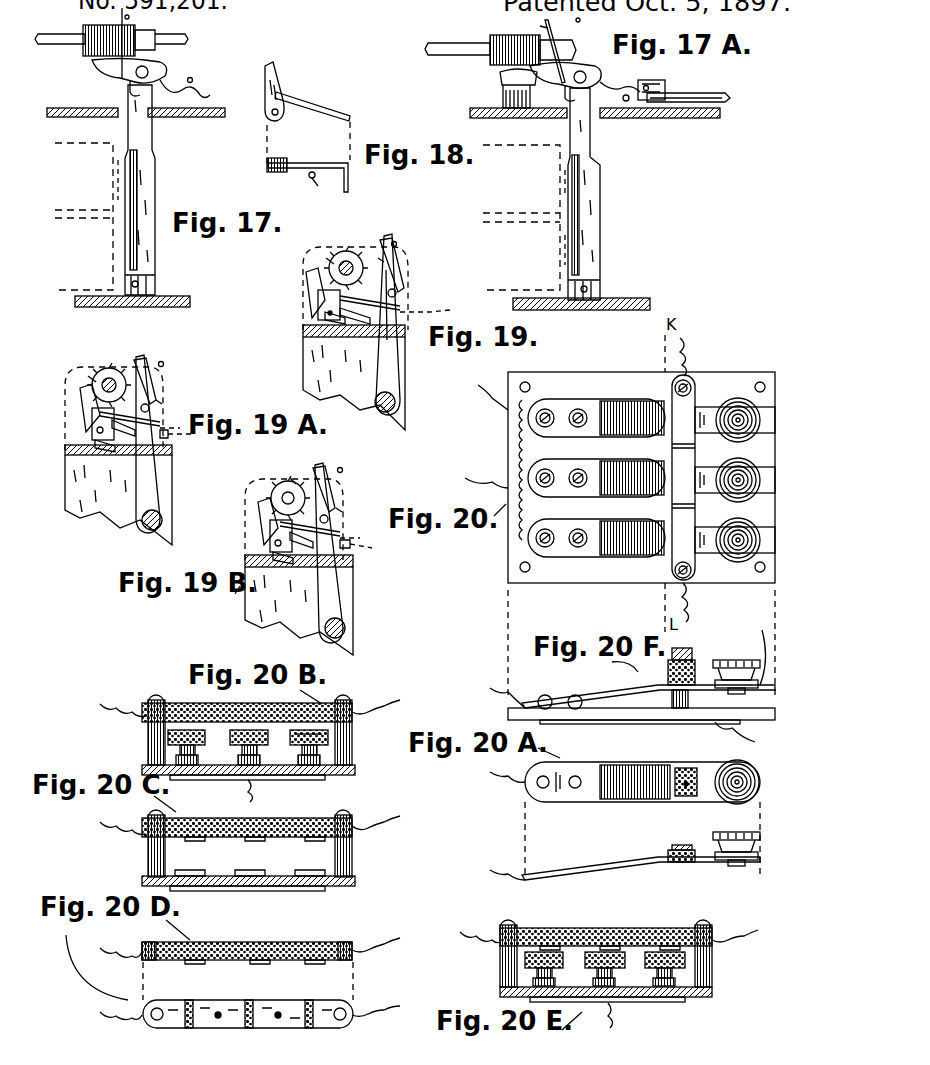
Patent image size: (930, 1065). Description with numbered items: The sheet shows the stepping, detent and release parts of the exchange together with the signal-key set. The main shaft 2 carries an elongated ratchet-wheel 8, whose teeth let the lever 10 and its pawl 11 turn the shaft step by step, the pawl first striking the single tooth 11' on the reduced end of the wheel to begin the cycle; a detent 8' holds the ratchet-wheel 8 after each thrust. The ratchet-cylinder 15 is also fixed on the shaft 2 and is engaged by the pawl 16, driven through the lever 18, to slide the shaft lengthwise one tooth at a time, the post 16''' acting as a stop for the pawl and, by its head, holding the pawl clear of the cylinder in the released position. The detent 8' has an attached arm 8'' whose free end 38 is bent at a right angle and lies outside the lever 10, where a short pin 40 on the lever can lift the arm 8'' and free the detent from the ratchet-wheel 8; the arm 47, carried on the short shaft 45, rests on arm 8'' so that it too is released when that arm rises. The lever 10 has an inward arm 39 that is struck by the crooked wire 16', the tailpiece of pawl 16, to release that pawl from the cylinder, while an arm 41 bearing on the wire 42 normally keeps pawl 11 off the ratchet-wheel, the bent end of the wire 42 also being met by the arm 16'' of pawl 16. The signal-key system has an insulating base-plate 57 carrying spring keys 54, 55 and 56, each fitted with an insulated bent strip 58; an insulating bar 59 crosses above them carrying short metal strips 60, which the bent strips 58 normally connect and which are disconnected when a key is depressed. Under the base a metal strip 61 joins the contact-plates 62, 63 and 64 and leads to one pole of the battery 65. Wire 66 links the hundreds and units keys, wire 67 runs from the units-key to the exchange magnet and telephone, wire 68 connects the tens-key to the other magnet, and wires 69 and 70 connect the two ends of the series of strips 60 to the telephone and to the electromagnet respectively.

In FIG. 17, the shaft 2 is at (170, 42).
In FIG. 17A, the shaft 2 is at (470, 48).
In FIG. 18, the ratchet-wheel 8 is at (307, 172).
In FIG. 19, the ratchet-wheel 8 is at (346, 253).
In FIG. 19A, the ratchet-wheel 8 is at (87, 378).
In FIG. 19B, the ratchet-wheel 8 is at (267, 504).
In FIG. 18, the detent 8' is at (282, 91).
In FIG. 19, the detent 8' is at (310, 294).
In FIG. 19A, the detent 8' is at (97, 412).
In FIG. 19B, the detent 8' is at (275, 525).
In FIG. 17, the arm 8'' is at (208, 58).
In FIG. 17A, the arm 8'' is at (663, 71).
In FIG. 19, the lever 10 is at (393, 342).
In FIG. 19A, the lever 10 is at (148, 462).
In FIG. 19B, the lever 10 is at (328, 566).
In FIG. 19, the pawl 11 is at (381, 239).
In FIG. 19A, the pawl 11 is at (195, 390).
In FIG. 19B, the pawl 11 is at (374, 498).
In FIG. 19, the tooth 11' is at (318, 244).
In FIG. 19A, the tooth 11' is at (70, 367).
In FIG. 19B, the tooth 11' is at (282, 465).
In FIG. 17, the ratchet-cylinder 15 is at (100, 45).
In FIG. 17A, the ratchet-cylinder 15 is at (512, 50).
In FIG. 17, the pawl 16 is at (113, 50).
In FIG. 17A, the pawl 16 is at (582, 83).
In FIG. 19, the pawl 16 is at (332, 344).
In FIG. 19A, the pawl 16 is at (90, 490).
In FIG. 19B, the pawl 16 is at (275, 580).
In FIG. 17, the crooked wire 16' is at (195, 81).
In FIG. 17A, the arm 16'' is at (519, 20).
In FIG. 17A, the post 16''' is at (491, 88).
In FIG. 17, the lever 18 is at (143, 140).
In FIG. 17A, the lever 18 is at (592, 178).
In FIG. 18, the free end 38 is at (352, 118).
In FIG. 19A, the free end 38 is at (170, 432).
In FIG. 19B, the free end 38 is at (352, 546).
In FIG. 17A, the arm 39 is at (627, 102).
In FIG. 19, the arm 39 is at (372, 330).
In FIG. 19A, the arm 39 is at (130, 440).
In FIG. 19B, the arm 39 is at (308, 552).
In FIG. 19, the pin 40 is at (412, 296).
In FIG. 19A, the pin 40 is at (162, 424).
In FIG. 19B, the pin 40 is at (346, 540).
In FIG. 19, the arm 41 is at (402, 275).
In FIG. 19A, the arm 41 is at (156, 385).
In FIG. 19B, the arm 41 is at (335, 494).
In FIG. 17, the wire 42 is at (130, 17).
In FIG. 17A, the wire 42 is at (580, 23).
In FIG. 19, the wire 42 is at (398, 244).
In FIG. 19A, the wire 42 is at (165, 362).
In FIG. 19B, the wire 42 is at (344, 469).
In FIG. 17A, the short shaft 45 is at (712, 92).
In FIG. 17A, the arm 47 is at (666, 84).
In FIG. 20, the key 54 is at (625, 425).
In FIG. 20A, the key 54 is at (642, 782).
In FIG. 20, the key 55 is at (628, 488).
In FIG. 20, the key 56 is at (632, 548).
In FIG. 20F, the key 56 is at (742, 660).
In FIG. 20A, the key 56 is at (736, 849).
In FIG. 20, the base-plate 57 is at (580, 566).
In FIG. 20F, the base-plate 57 is at (622, 716).
In FIG. 20B, the base-plate 57 is at (352, 772).
In FIG. 20C, the base-plate 57 is at (350, 890).
In FIG. 20E, the base-plate 57 is at (700, 992).
In FIG. 20F, the bent strip of metal 58 is at (668, 680).
In FIG. 20A, the bent strip of metal 58 is at (682, 768).
In FIG. 20B, the bent strip of metal 58 is at (300, 738).
In FIG. 20E, the bent strip of metal 58 is at (600, 952).
In FIG. 20, the bar 59 is at (692, 400).
In FIG. 20B, the bar 59 is at (352, 708).
In FIG. 20C, the bar 59 is at (352, 822).
In FIG. 20D, the bar 59 is at (268, 948).
In FIG. 20E, the bar 59 is at (680, 932).
In FIG. 20C, the short strips of metal 60 is at (300, 842).
In FIG. 20D, the short strips of metal 60 is at (168, 1010).
In FIG. 20E, the short strips of metal 60 is at (630, 944).
In FIG. 20F, the strip of metal 61 is at (728, 718).
In FIG. 20A, the strip of metal 61 is at (641, 868).
In FIG. 20B, the strip of metal 61 is at (224, 778).
In FIG. 20C, the strip of metal 61 is at (266, 888).
In FIG. 20E, the strip of metal 61 is at (640, 1002).
In FIG. 20, the contact-plate 62 is at (750, 400).
In FIG. 20A, the contact-plate 62 is at (737, 782).
In FIG. 20B, the contact-plate 62 is at (178, 758).
In FIG. 20, the contact-plate 63 is at (758, 470).
In FIG. 20B, the contact-plate 63 is at (250, 766).
In FIG. 20, the contact-plate 64 is at (758, 532).
In FIG. 20F, the contact-plate 64 is at (760, 630).
In FIG. 20B, the contact-plate 64 is at (300, 738).
In FIG. 20F, the battery 65 is at (735, 739).
In FIG. 20B, the battery 65 is at (254, 802).
In FIG. 20E, the battery 65 is at (636, 1024).
In FIG. 20, the wire 66 is at (516, 446).
In FIG. 20, the wire 67 is at (485, 388).
In FIG. 20, the wire 68 is at (485, 492).
In FIG. 20, the wire 69 is at (686, 344).
In FIG. 20B, the wire 69 is at (125, 708).
In FIG. 20C, the wire 69 is at (125, 832).
In FIG. 20D, the wire 69 is at (120, 984).
In FIG. 20E, the wire 69 is at (486, 932).
In FIG. 20, the wire 70 is at (688, 610).
In FIG. 20B, the wire 70 is at (392, 703).
In FIG. 20C, the wire 70 is at (388, 828).
In FIG. 20D, the wire 70 is at (376, 977).
In FIG. 20E, the wire 70 is at (746, 942).